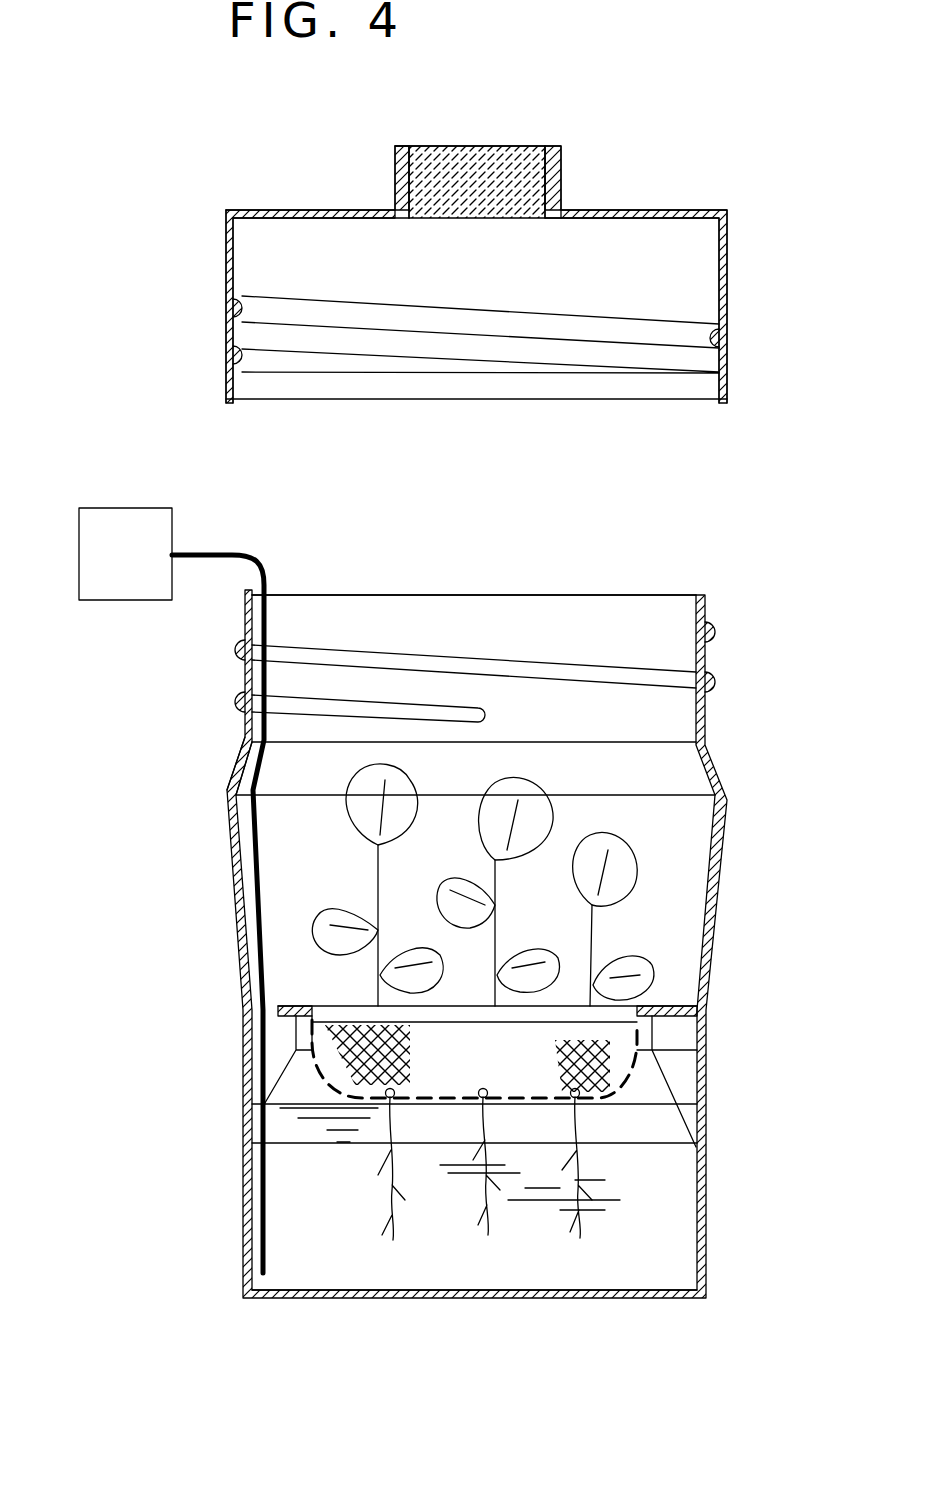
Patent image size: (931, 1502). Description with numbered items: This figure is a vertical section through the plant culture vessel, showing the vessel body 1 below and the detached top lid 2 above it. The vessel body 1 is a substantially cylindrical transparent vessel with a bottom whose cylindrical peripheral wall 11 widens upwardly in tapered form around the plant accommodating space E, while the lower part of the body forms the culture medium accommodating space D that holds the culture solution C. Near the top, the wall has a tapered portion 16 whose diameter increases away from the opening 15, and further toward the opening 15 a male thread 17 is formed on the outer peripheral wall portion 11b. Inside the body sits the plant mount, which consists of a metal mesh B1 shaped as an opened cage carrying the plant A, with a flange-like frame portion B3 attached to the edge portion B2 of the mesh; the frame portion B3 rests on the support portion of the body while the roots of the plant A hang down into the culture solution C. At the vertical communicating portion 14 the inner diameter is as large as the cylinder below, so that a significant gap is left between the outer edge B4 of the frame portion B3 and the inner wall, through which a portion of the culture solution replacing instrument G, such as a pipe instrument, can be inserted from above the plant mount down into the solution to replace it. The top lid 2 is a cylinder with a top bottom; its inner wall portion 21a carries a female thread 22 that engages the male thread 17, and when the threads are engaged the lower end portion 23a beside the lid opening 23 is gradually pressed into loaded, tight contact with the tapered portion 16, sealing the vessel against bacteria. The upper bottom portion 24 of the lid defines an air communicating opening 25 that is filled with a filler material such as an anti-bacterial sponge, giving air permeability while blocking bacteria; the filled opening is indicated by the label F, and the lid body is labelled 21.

The vessel body 1 is at (752, 843).
The top lid 2 is at (696, 186).
The cylindrical peripheral wall 11 is at (712, 914).
The outer peripheral wall portion 11b is at (707, 718).
The vertical communicating portion 14 is at (276, 980).
The opening 15 is at (552, 620).
The tapered portion 16 is at (244, 775).
The male thread 17 is at (712, 633).
The cap body 21 is at (727, 292).
The inner wall portion 21a is at (716, 262).
The female thread 22 is at (714, 335).
The opening 23 is at (428, 380).
The lower end portion 23a is at (229, 401).
The upper bottom portion 24 is at (304, 212).
The air communicating opening 25 is at (519, 160).
The plant A is at (483, 1100).
The metal mesh B1 is at (530, 1100).
The edge portion B2 is at (704, 1056).
The frame portion B3 is at (660, 1005).
The outer edge B4 is at (682, 1005).
The culture solution C is at (668, 1222).
The culture medium accommodating space D is at (305, 1203).
The plant accommodating space E is at (280, 852).
The filter F is at (447, 164).
The culture solution replacing instrument G is at (214, 563).